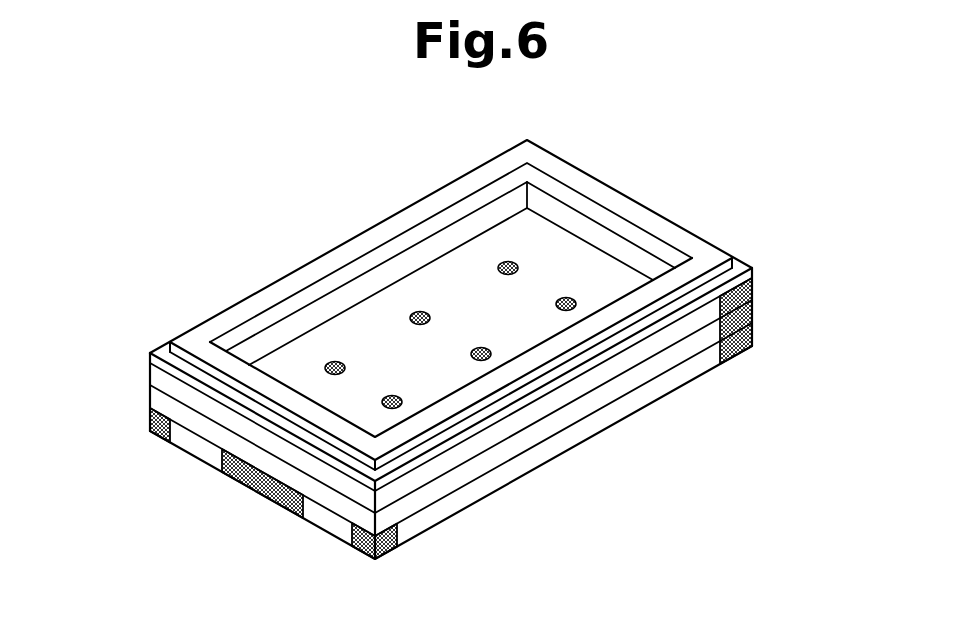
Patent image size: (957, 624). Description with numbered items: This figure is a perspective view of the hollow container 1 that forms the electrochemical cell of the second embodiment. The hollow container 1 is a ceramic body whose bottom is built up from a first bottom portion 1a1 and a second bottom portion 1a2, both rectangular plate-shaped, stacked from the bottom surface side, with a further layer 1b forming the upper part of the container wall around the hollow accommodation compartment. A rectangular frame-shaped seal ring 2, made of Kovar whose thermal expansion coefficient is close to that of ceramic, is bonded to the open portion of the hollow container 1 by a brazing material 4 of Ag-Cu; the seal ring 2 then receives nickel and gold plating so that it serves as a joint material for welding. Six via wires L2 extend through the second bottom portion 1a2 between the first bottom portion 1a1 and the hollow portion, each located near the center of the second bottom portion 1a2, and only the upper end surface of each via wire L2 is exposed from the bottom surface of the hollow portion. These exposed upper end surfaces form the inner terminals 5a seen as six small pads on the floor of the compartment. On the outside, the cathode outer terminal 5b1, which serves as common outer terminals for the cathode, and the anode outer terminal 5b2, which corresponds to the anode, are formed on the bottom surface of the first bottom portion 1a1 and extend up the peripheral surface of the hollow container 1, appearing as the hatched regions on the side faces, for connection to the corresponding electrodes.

The hollow container 1 is at (515, 409).
The first bottom portion 1a1 is at (755, 330).
The second bottom portion 1a2 is at (757, 302).
The upper layer of substrate 1b is at (757, 273).
The seal ring 2 is at (566, 173).
The brazing material 4 is at (162, 350).
The inner terminals 5a is at (450, 296).
The cathode outer terminal 5b1 is at (162, 440).
The anode outer terminal 5b2 is at (744, 350).
The via wires L2 is at (430, 317).